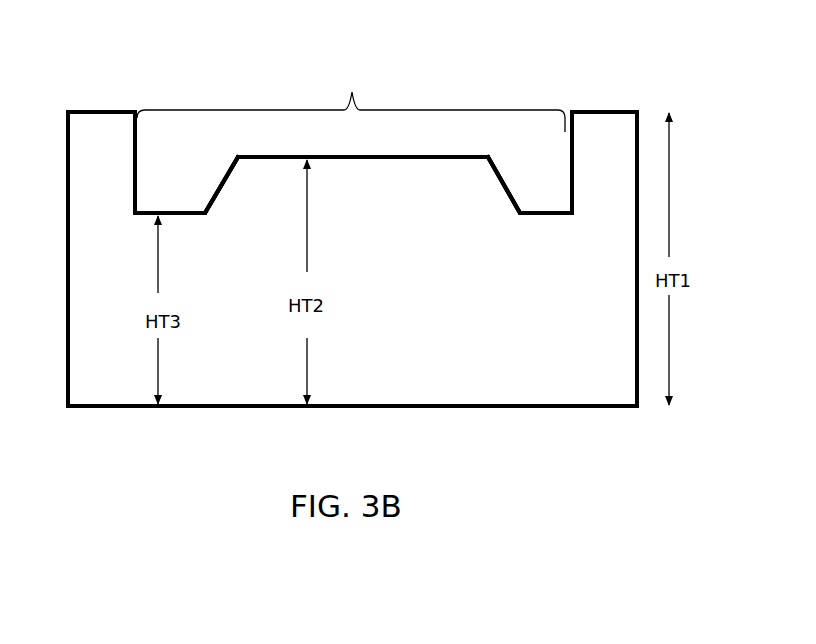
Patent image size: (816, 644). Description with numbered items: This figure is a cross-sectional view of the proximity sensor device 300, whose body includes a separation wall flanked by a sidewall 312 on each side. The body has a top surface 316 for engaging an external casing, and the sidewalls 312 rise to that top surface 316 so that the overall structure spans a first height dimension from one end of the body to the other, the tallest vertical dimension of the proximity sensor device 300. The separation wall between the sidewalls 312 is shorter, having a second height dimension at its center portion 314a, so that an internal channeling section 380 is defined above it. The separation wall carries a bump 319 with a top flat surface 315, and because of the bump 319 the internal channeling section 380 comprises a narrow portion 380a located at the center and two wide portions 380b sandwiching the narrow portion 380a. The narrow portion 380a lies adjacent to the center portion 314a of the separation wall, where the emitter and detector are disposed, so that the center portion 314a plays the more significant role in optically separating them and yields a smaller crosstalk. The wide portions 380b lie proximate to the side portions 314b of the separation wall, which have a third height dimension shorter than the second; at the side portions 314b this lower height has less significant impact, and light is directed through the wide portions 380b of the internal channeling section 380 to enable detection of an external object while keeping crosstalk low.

The proximity sensor device 300 is at (155, 77).
The sidewall 312 is at (116, 157).
The center portion of the separation wall 314a is at (421, 281).
The side portions of the separation wall 314b is at (218, 282).
The top flat surface 315 is at (443, 148).
The top surface 316 is at (608, 98).
The bump 319 is at (411, 191).
The internal channeling section 380 is at (351, 100).
The narrow portion 380a is at (388, 146).
The wide portion 380b is at (207, 157).